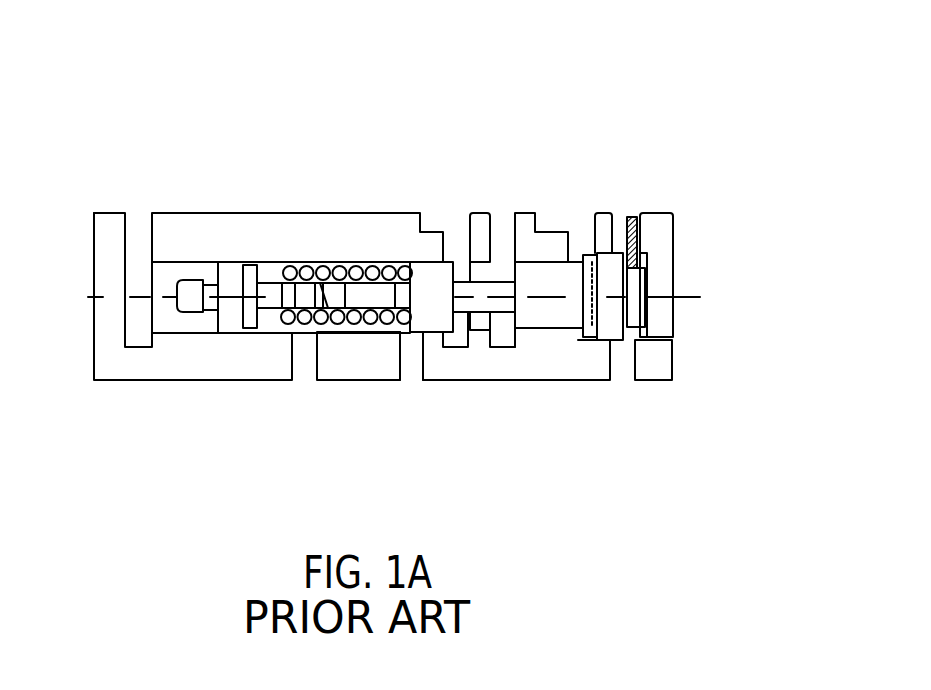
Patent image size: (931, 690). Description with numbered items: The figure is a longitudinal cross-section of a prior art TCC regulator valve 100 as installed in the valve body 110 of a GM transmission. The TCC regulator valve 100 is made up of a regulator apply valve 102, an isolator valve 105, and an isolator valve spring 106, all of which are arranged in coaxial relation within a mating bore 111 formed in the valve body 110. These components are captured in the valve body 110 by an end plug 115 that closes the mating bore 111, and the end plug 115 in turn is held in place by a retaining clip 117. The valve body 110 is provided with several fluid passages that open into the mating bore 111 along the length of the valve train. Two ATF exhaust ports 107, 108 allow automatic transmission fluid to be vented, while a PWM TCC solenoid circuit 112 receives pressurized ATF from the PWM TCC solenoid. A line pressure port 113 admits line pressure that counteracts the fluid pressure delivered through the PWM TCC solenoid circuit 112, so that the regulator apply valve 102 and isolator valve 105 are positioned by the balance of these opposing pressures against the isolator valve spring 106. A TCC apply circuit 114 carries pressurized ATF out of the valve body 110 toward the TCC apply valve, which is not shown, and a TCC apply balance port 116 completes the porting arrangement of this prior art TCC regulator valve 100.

The TCC regulator valve 100 is at (385, 102).
The regulator apply valve 102 is at (543, 323).
The isolator valve 105 is at (232, 322).
The isolator valve spring 106 is at (340, 310).
The ATF exhaust port 107 is at (305, 353).
The ATF exhaust port 108 is at (410, 352).
The valve body 110 is at (258, 256).
The mating bore 111 is at (177, 323).
The PWM TCC solenoid circuit 112 is at (138, 207).
The line pressure port 113 is at (503, 218).
The TCC apply circuit 114 is at (456, 218).
The end plug 115 is at (667, 272).
The TCC apply balance port 116 is at (581, 208).
The retaining clip 117 is at (630, 218).